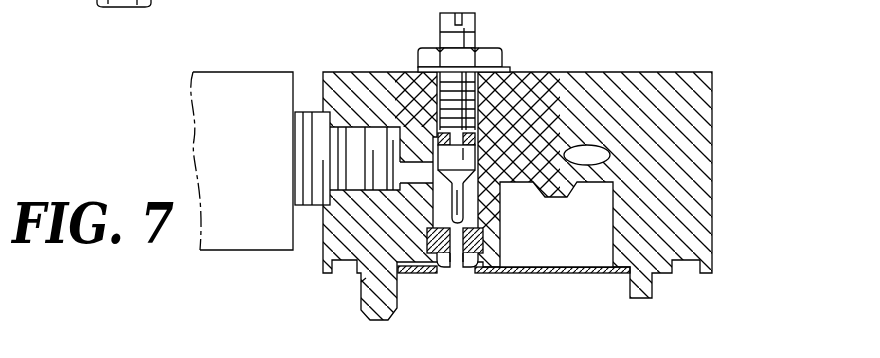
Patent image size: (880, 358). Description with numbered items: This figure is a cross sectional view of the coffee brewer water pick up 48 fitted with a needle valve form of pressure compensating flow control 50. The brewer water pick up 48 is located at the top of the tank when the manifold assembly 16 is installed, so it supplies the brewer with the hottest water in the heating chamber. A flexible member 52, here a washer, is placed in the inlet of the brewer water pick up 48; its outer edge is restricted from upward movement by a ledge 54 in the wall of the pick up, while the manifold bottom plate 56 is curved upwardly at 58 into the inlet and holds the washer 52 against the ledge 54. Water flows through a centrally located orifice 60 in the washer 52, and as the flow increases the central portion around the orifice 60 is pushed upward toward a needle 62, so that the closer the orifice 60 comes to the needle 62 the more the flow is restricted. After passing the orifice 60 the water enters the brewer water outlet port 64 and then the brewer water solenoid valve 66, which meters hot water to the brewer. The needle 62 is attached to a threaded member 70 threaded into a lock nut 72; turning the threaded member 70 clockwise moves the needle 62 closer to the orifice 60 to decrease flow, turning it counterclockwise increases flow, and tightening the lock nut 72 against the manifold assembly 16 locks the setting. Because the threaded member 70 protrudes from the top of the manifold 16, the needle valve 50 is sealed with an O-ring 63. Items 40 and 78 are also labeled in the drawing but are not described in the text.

The manifold assembly 16 is at (697, 122).
The clamp 40 is at (132, 8).
The brewer water pick up 48 is at (462, 270).
The pressure compensating flow control 50 is at (530, 98).
The flexible member 52 is at (483, 240).
The ledge 54 is at (485, 222).
The manifold bottom plate 56 is at (415, 274).
The upwardly curved portion of manifold bottom plate 58 is at (438, 275).
The orifice 60 is at (456, 256).
The needle 62 is at (480, 150).
The O-ring 63 is at (468, 212).
The brewer water outlet port 64 is at (389, 132).
The brewer water solenoid valve 66 is at (270, 82).
The threaded member 70 is at (475, 28).
The lock nut 72 is at (493, 56).
The fitting 78 is at (206, 352).